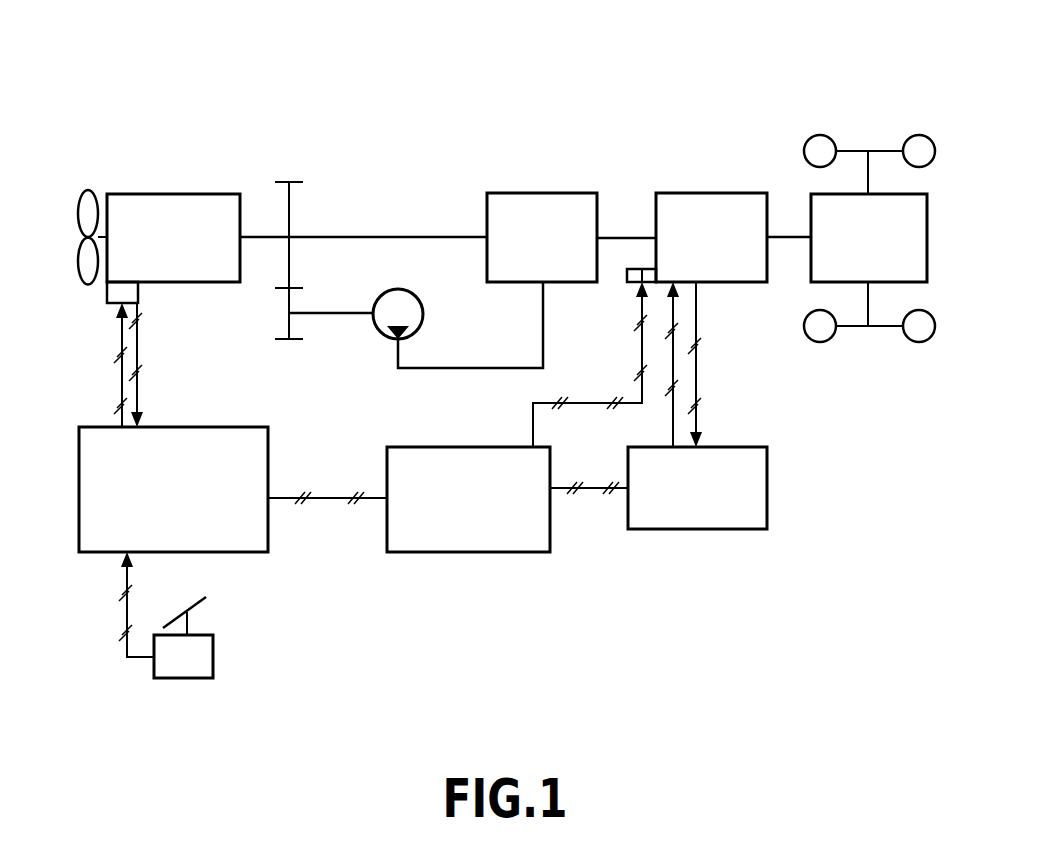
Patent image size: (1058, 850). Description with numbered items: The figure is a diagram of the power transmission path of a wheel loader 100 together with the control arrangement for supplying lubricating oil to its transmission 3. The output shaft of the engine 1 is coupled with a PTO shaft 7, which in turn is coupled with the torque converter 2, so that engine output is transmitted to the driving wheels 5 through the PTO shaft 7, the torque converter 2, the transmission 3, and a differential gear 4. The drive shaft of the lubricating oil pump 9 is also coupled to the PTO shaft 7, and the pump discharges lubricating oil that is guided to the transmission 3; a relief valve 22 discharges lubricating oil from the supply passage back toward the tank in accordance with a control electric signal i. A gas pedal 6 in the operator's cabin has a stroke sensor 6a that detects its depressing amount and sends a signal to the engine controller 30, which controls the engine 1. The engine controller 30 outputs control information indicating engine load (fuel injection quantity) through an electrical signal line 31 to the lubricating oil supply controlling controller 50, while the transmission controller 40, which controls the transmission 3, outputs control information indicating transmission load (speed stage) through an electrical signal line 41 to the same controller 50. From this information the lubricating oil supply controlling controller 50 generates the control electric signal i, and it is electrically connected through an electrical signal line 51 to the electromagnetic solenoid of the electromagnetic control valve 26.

The wheel loader 100 is at (668, 79).
The engine 1 is at (153, 193).
The PTO shaft 7 is at (288, 181).
The lubricating oil pump 9 is at (378, 297).
The torque converter 2 is at (511, 192).
The transmission 3 is at (678, 192).
The relief valve 22 is at (647, 268).
The electromagnetic control valve 26 is at (634, 268).
The differential gear 4 is at (810, 205).
The driving wheels 5 is at (882, 148).
The engine controller 30 is at (196, 426).
The gas pedal 6 is at (200, 607).
The stroke sensor 6a is at (213, 657).
The lubricating oil supply controlling controller 50 is at (431, 446).
The electrical signal line 31 is at (328, 502).
The electrical signal line 51 is at (584, 406).
The transmission controller 40 is at (743, 446).
The electrical signal line 41 is at (588, 491).